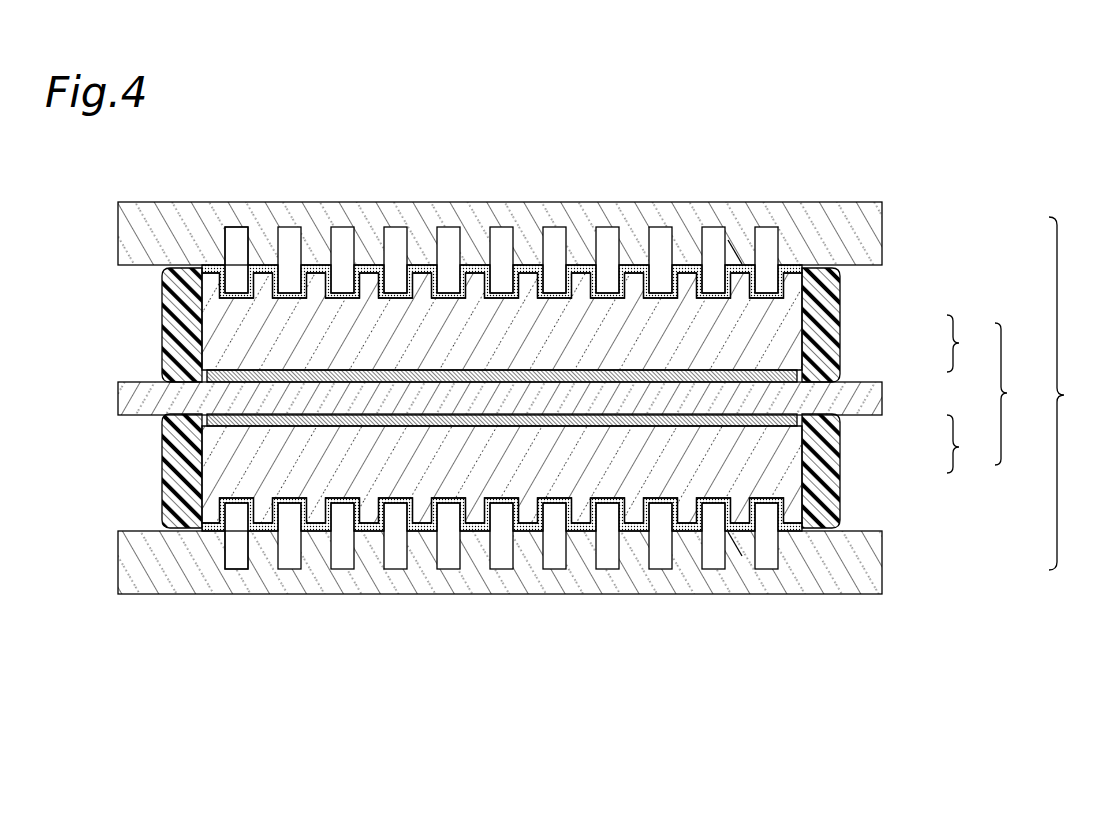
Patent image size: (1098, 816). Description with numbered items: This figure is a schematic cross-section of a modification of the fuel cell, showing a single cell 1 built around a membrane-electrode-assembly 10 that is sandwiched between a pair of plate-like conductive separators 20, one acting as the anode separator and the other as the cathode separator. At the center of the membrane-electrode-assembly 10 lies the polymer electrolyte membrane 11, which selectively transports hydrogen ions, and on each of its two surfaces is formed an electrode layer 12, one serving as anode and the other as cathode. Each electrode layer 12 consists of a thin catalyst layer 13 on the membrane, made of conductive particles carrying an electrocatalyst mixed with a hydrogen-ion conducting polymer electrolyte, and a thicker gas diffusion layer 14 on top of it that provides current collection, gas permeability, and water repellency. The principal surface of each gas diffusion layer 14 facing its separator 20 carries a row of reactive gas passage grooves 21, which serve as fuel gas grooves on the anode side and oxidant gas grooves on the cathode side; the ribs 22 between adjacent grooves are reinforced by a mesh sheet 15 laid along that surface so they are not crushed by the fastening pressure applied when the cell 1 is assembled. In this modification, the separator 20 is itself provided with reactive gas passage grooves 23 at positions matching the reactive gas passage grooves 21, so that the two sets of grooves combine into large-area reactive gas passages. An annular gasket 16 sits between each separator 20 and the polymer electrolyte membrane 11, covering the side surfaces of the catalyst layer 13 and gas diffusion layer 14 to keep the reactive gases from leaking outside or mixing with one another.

The cell 1 is at (1069, 393).
The membrane-electrode-assembly 10 is at (1021, 394).
The polymer electrolyte membrane 11 is at (873, 398).
The electrode layer 12 is at (970, 394).
The catalyst layer 13 is at (788, 375).
The gas diffusion layer 14 is at (787, 333).
The mesh sheet 15 is at (735, 245).
The annular gasket 16 is at (178, 305).
The separator 20 is at (873, 230).
The reactive gas passage groove 21 is at (236, 285).
The rib 22 is at (420, 277).
The reactive gas passage groove 23 is at (292, 250).